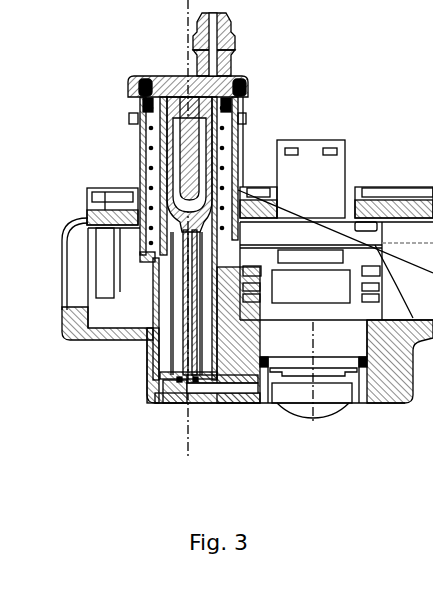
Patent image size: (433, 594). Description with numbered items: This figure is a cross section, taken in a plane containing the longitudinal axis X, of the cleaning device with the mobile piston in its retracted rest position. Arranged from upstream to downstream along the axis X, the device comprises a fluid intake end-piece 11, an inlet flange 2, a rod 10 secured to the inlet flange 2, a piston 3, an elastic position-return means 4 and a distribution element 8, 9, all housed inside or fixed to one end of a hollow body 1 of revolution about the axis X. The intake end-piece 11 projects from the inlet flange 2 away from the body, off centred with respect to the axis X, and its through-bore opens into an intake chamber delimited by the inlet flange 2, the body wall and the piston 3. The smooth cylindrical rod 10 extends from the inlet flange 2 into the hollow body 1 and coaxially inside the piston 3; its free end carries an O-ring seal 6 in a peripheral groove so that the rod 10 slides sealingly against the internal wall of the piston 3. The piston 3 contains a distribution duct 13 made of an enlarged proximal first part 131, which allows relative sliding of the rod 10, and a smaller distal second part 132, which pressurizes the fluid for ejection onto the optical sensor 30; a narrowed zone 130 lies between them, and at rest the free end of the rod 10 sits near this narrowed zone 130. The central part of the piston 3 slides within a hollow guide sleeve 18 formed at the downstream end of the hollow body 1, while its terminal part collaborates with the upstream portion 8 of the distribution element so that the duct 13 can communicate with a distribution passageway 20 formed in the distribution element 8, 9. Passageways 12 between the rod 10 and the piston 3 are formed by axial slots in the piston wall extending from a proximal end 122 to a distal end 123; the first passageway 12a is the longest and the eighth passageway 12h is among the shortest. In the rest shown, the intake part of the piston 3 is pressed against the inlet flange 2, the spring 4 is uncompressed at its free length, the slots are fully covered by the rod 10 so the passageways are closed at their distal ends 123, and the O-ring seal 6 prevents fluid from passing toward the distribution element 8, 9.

The hollow body 1 is at (245, 172).
The inlet flange 2 is at (128, 80).
The piston 3 is at (140, 150).
The elastic position-return means 4 is at (137, 173).
The O-ring seal 6 is at (140, 196).
The upstream portion of the distribution element 8 is at (172, 403).
The distribution element 9 is at (175, 391).
The rod 10 is at (137, 123).
The fluid intake end-piece 11 is at (231, 45).
The passageways 12 is at (157, 83).
The eighth passageway 12h is at (148, 105).
The first passageway 12a is at (238, 104).
The distribution duct 13 is at (177, 260).
The hollow guide sleeve 18 is at (177, 235).
The distribution passageway 20 is at (237, 403).
The optical sensor 30 is at (338, 420).
The proximal end 122 is at (240, 75).
The distal end 123 is at (240, 135).
The narrowed zone 130 is at (68, 232).
The proximal first part 131 is at (143, 163).
The distal second part 132 is at (177, 302).
The longitudinal axis X is at (188, 425).